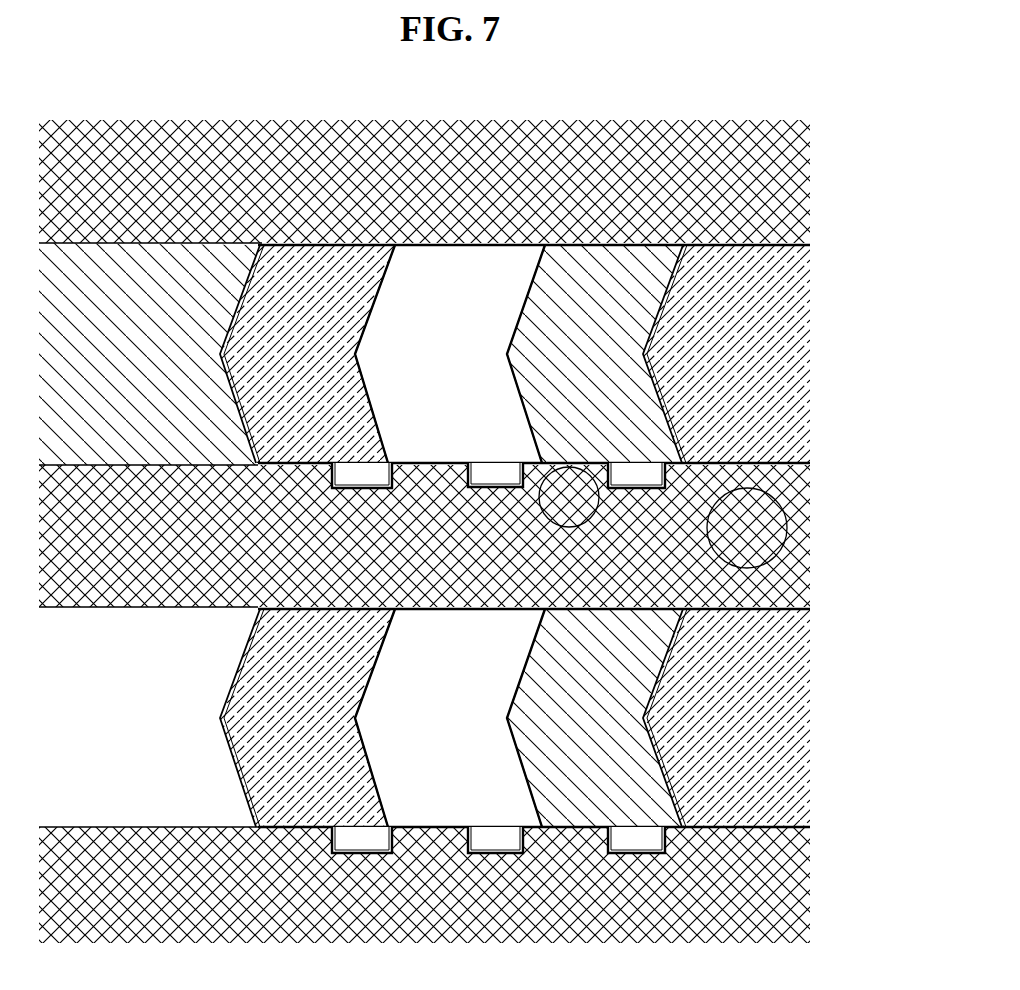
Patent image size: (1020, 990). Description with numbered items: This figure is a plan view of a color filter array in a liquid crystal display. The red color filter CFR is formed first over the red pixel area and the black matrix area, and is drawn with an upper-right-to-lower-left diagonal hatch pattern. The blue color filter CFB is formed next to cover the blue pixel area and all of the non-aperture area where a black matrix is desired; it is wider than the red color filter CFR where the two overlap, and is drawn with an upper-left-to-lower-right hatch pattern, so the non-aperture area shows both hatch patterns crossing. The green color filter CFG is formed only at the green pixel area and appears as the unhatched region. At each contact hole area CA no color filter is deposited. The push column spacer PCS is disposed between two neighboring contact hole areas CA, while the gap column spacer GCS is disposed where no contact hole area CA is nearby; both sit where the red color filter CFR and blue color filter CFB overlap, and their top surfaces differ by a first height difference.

The red color filter CFR is at (173, 242).
The green color filter CFG is at (450, 536).
The blue color filter CFB is at (722, 244).
The contact hole area CA is at (367, 474).
The push column spacer PCS is at (570, 528).
The gap column spacer GCS is at (790, 528).